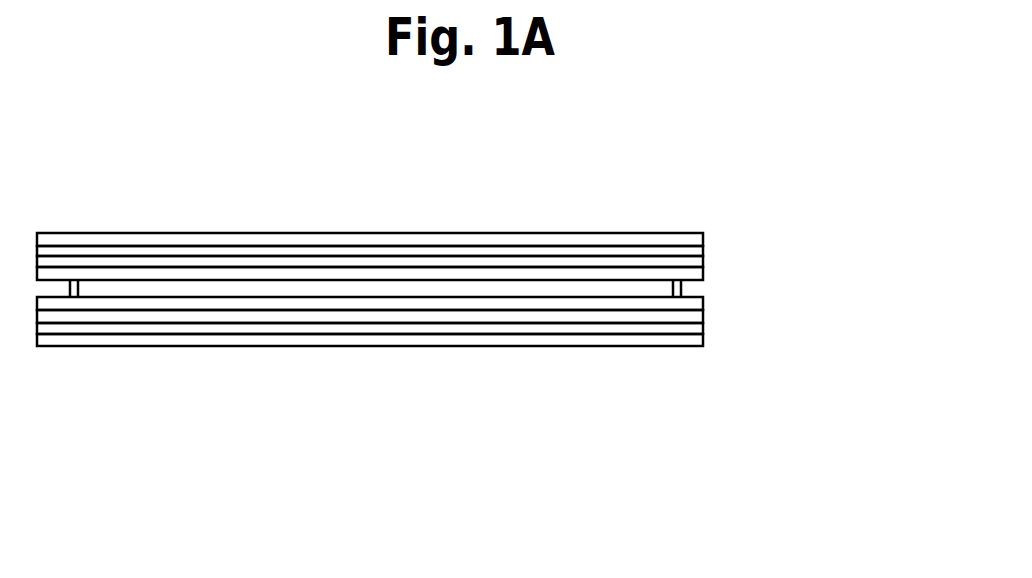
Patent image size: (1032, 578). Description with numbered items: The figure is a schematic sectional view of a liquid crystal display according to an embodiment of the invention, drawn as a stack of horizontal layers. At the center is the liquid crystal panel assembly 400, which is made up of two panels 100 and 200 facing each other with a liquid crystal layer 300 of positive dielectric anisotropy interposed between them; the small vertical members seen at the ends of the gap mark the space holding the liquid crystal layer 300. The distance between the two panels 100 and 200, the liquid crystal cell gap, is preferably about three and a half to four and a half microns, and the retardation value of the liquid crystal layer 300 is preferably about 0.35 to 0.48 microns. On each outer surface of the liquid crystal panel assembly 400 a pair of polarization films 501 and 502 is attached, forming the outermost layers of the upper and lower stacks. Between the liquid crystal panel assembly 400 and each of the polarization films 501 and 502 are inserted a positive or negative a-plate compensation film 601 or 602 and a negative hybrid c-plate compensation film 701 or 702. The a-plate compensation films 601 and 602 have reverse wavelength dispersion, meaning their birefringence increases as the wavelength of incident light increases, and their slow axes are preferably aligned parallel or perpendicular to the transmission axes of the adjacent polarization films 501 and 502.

The panel 100 is at (428, 220).
The panel 200 is at (428, 358).
The liquid crystal layer 300 is at (662, 287).
The liquid crystal panel assembly 400 is at (472, 289).
The polarization film 501 is at (584, 340).
The polarization film 502 is at (340, 233).
The a-plate compensation film 601 is at (445, 313).
The a-plate compensation film 602 is at (482, 260).
The negative hybrid c-plate compensation film 701 is at (523, 325).
The negative hybrid c-plate compensation film 702 is at (403, 250).